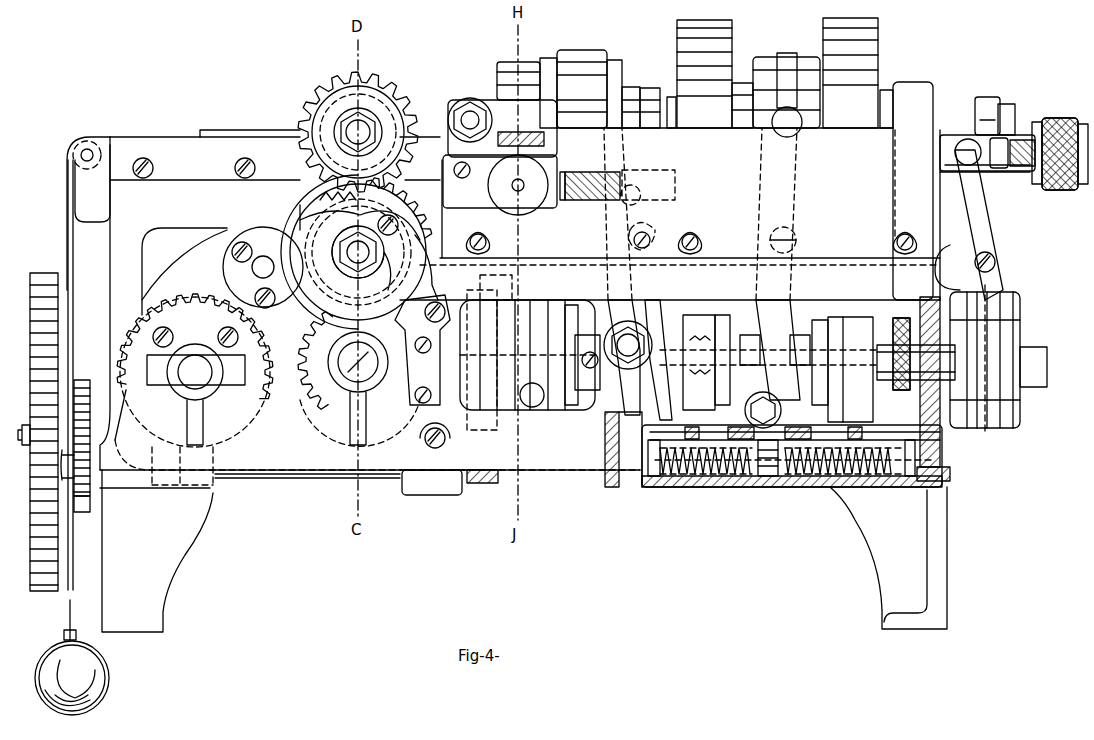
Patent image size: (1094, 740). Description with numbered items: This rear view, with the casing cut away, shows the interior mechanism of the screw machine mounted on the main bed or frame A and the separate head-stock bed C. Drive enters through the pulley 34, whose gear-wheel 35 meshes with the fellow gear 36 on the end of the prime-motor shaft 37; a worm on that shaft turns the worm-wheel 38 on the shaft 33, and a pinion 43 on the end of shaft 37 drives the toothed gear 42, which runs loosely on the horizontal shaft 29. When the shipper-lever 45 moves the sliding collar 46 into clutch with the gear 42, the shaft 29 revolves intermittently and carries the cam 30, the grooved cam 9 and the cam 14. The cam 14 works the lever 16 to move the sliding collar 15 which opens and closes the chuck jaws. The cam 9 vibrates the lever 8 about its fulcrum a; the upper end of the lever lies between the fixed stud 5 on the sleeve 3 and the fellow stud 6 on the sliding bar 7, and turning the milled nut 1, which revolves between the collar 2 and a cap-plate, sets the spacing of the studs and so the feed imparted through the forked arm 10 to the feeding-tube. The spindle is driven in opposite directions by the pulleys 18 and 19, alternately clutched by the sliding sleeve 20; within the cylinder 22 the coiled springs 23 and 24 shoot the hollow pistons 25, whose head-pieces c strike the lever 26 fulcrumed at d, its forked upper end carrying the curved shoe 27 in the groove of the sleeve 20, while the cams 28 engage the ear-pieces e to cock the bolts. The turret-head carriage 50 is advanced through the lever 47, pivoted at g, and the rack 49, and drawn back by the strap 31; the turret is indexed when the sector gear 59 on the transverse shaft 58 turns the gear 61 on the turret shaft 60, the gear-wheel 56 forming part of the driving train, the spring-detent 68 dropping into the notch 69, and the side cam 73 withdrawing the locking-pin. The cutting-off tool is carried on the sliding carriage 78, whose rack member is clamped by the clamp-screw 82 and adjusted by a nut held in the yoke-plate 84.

The milled adjusting nut 1 is at (1060, 116).
The collar 2 is at (1036, 118).
The sleeve 3 is at (1022, 178).
The fixed stud 5 is at (948, 140).
The fellow stud 6 is at (1000, 120).
The sliding bar 7 is at (1002, 175).
The lever 8 is at (969, 225).
The grooved cam 9 is at (1015, 410).
The forked arm 10 is at (988, 106).
The cam 14 is at (628, 345).
The sliding collar 15 is at (628, 92).
The lever 16 is at (639, 274).
The pulley 18 is at (715, 65).
The pulley 19 is at (850, 65).
The sliding clutch sleeve 20 is at (786, 81).
The cylinder 22 is at (735, 485).
The coiled spring 23 is at (680, 478).
The coiled spring 24 is at (818, 480).
The hollow piston 25 is at (752, 488).
The lever 26 is at (772, 278).
The curved shoe 27 is at (789, 52).
The cam 28 is at (770, 368).
The horizontal shaft 29 is at (952, 385).
The cam 30 is at (582, 343).
The strap 31 is at (88, 203).
The shaft 33 is at (196, 406).
The pulley 34 is at (38, 422).
The gear-wheel 35 is at (77, 428).
The gear 36 is at (83, 516).
The prime-motor shaft 37 is at (294, 478).
The worm-wheel 38 is at (377, 382).
The toothed gear 42 is at (468, 296).
The pinion 43 is at (450, 490).
The shipper-lever 45 is at (532, 395).
The sliding collar 46 is at (530, 355).
The lever 47 is at (184, 271).
The rack 49 is at (240, 134).
The sliding carriage 50 is at (275, 158).
The gear-wheel 56 is at (359, 378).
The transverse shaft 58 is at (358, 252).
The sector gear 59 is at (300, 220).
The turret shaft 60 is at (358, 132).
The gear 61 is at (312, 115).
The spring-detent 68 is at (410, 222).
The notch 69 is at (326, 204).
The side cam 73 is at (361, 249).
The sliding tool-carriage 78 is at (500, 181).
The clamp-screw 82 is at (502, 109).
The yoke-plate 84 is at (518, 185).
The fulcrum a is at (1000, 265).
The head-piece c is at (769, 432).
The fulcrum d is at (800, 240).
The ear-piece e is at (771, 432).
The fulcrum g is at (263, 267).
The main bed or frame A is at (670, 279).
The head-stock bed C is at (691, 214).